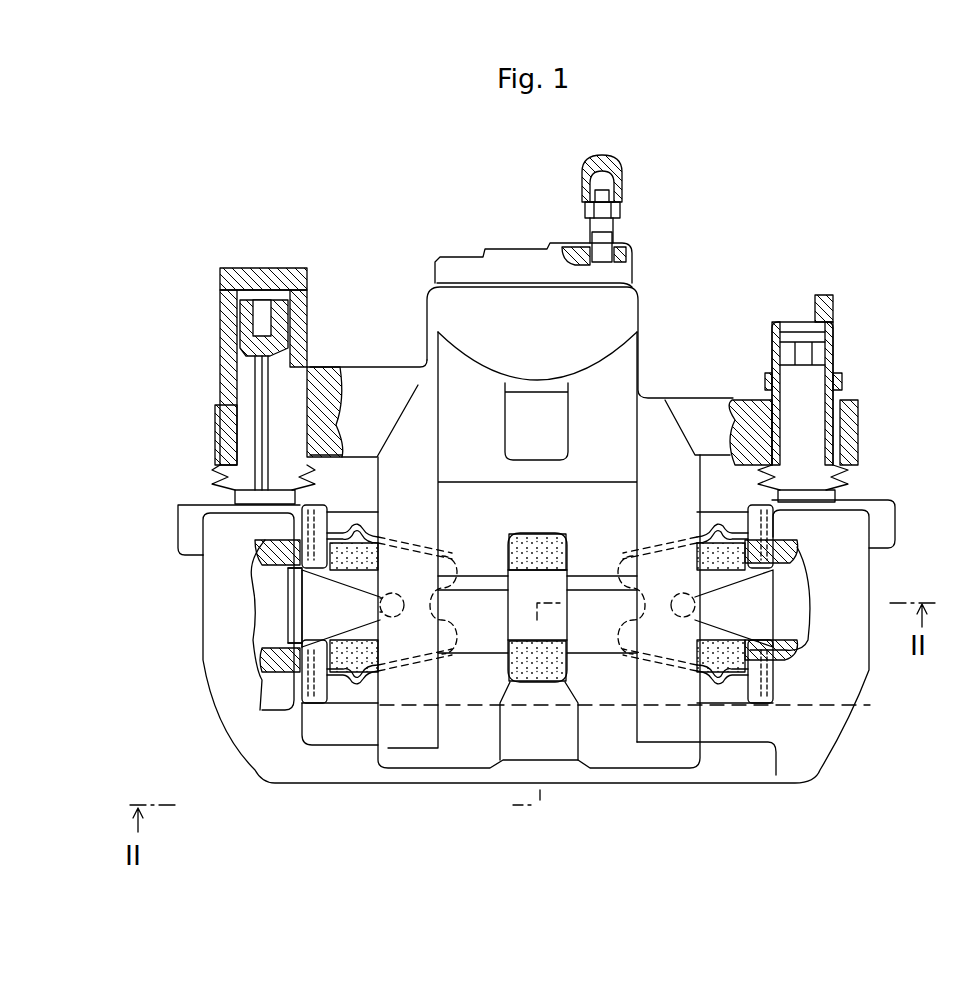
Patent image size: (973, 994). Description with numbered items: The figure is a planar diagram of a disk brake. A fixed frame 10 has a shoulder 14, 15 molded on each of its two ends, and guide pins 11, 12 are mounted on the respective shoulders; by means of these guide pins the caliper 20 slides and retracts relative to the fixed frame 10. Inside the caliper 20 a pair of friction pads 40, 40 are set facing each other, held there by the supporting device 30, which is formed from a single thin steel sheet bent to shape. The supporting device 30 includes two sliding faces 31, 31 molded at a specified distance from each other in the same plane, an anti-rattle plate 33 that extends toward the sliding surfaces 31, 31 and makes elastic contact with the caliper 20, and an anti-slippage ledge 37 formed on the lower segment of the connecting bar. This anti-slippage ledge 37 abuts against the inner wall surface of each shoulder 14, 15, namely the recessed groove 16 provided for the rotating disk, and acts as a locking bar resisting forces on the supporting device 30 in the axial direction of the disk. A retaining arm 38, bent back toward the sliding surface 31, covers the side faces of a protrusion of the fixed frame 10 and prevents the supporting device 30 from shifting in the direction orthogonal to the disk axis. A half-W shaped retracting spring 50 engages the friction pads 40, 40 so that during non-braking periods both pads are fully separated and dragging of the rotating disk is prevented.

The fixed frame 10 is at (874, 569).
The guide pin 11 is at (262, 385).
The guide pin 12 is at (813, 438).
The shoulder 14 is at (855, 525).
The shoulder 15 is at (218, 530).
The recessed groove 16 is at (255, 578).
The caliper 20 is at (640, 292).
The supporting device 30 is at (284, 587).
The sliding face 31 is at (315, 662).
The anti-rattle plate 33 is at (323, 610).
The anti-slippage ledge 37 is at (293, 627).
The retaining arm 38 is at (775, 640).
The friction pad 40 is at (344, 502).
The retracting spring 50 is at (353, 688).